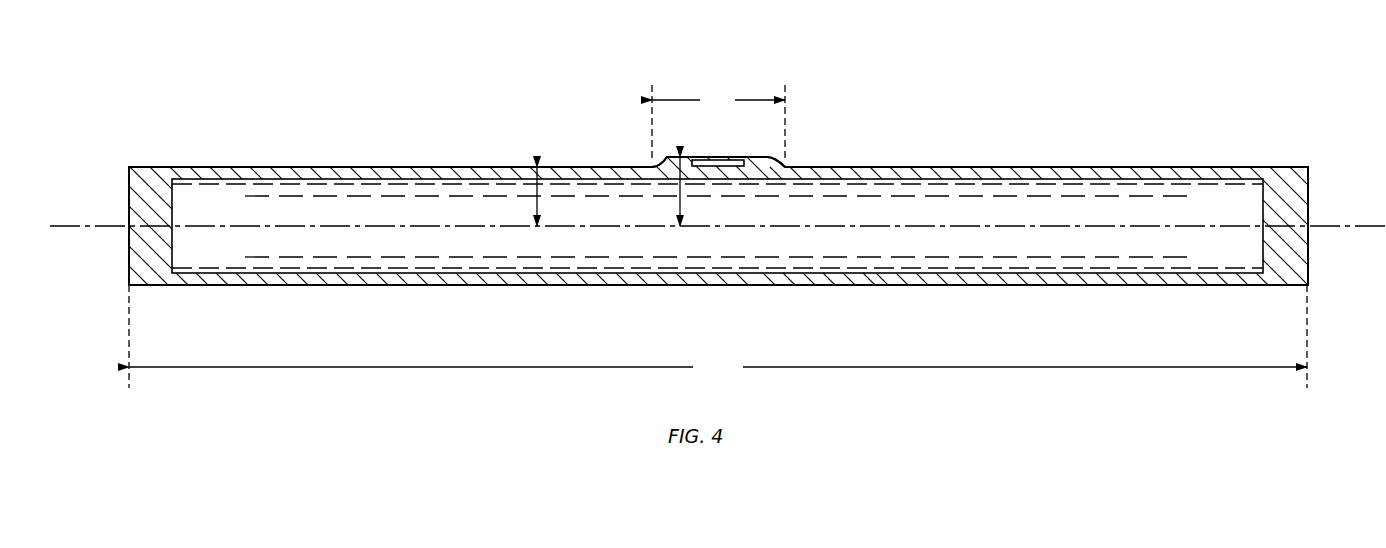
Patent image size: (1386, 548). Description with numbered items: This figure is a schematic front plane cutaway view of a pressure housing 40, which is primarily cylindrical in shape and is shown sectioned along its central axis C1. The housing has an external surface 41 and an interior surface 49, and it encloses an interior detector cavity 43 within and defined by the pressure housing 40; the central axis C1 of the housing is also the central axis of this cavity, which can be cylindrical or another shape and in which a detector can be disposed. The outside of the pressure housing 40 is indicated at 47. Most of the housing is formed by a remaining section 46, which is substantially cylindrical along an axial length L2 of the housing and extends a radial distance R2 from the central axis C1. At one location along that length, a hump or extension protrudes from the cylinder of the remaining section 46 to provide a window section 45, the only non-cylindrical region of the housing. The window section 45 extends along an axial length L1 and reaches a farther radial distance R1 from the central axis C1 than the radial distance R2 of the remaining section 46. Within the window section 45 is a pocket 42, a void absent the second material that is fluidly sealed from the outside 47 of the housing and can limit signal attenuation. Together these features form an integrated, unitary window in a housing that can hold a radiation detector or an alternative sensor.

The pressure housing 40 is at (395, 72).
The external surface 41 is at (1045, 167).
The pocket 42 is at (712, 160).
The interior detector cavity 43 is at (340, 241).
The window section 45 is at (767, 165).
The remaining section 46 is at (385, 168).
The outside of pressure housing 47 is at (263, 131).
The interior surface 49 is at (1017, 273).
The central axis C1 is at (1325, 226).
The radial distance of window section R1 is at (677, 191).
The radial distance of remaining section R2 is at (530, 190).
The axial length of window section L1 is at (718, 122).
The axial length of pressure housing L2 is at (718, 336).